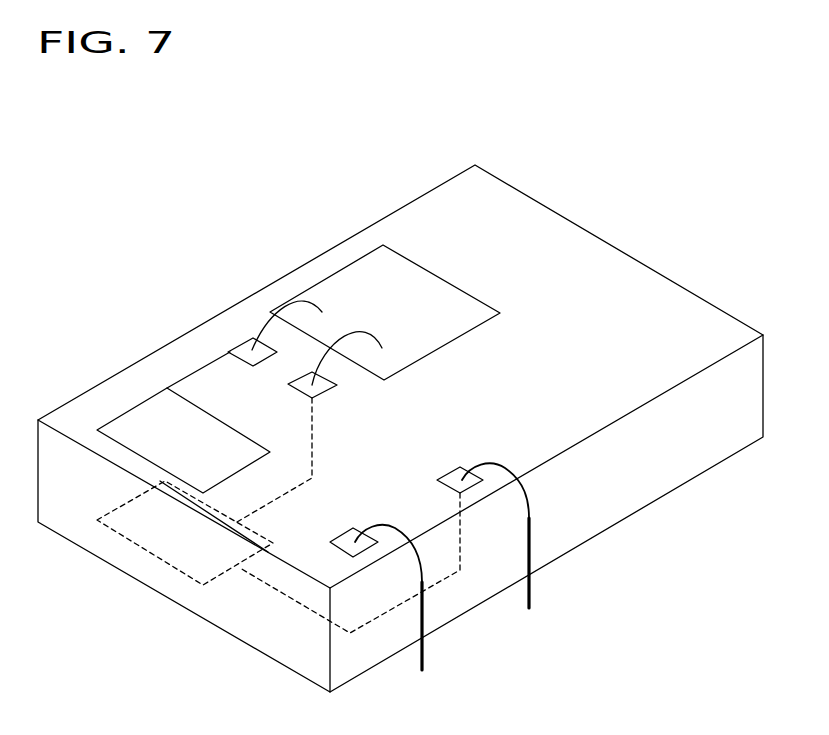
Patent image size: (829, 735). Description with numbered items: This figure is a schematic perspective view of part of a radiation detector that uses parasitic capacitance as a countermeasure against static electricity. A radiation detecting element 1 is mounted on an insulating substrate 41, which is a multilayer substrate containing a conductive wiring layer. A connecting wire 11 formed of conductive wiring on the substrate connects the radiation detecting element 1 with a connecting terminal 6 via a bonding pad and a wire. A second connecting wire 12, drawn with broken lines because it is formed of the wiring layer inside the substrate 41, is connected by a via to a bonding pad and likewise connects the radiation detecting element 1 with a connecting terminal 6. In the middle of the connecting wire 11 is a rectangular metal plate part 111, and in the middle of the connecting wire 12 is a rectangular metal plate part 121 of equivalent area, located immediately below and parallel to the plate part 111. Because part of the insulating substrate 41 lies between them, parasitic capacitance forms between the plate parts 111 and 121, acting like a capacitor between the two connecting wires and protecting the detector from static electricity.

The radiation detecting element 1 is at (367, 268).
The connecting terminal 6 is at (423, 645).
The connecting wire 11 is at (207, 380).
The connecting wire 12 is at (313, 484).
The insulating substrate 41 is at (587, 250).
The plate part 111 is at (140, 418).
The plate part 121 is at (172, 547).